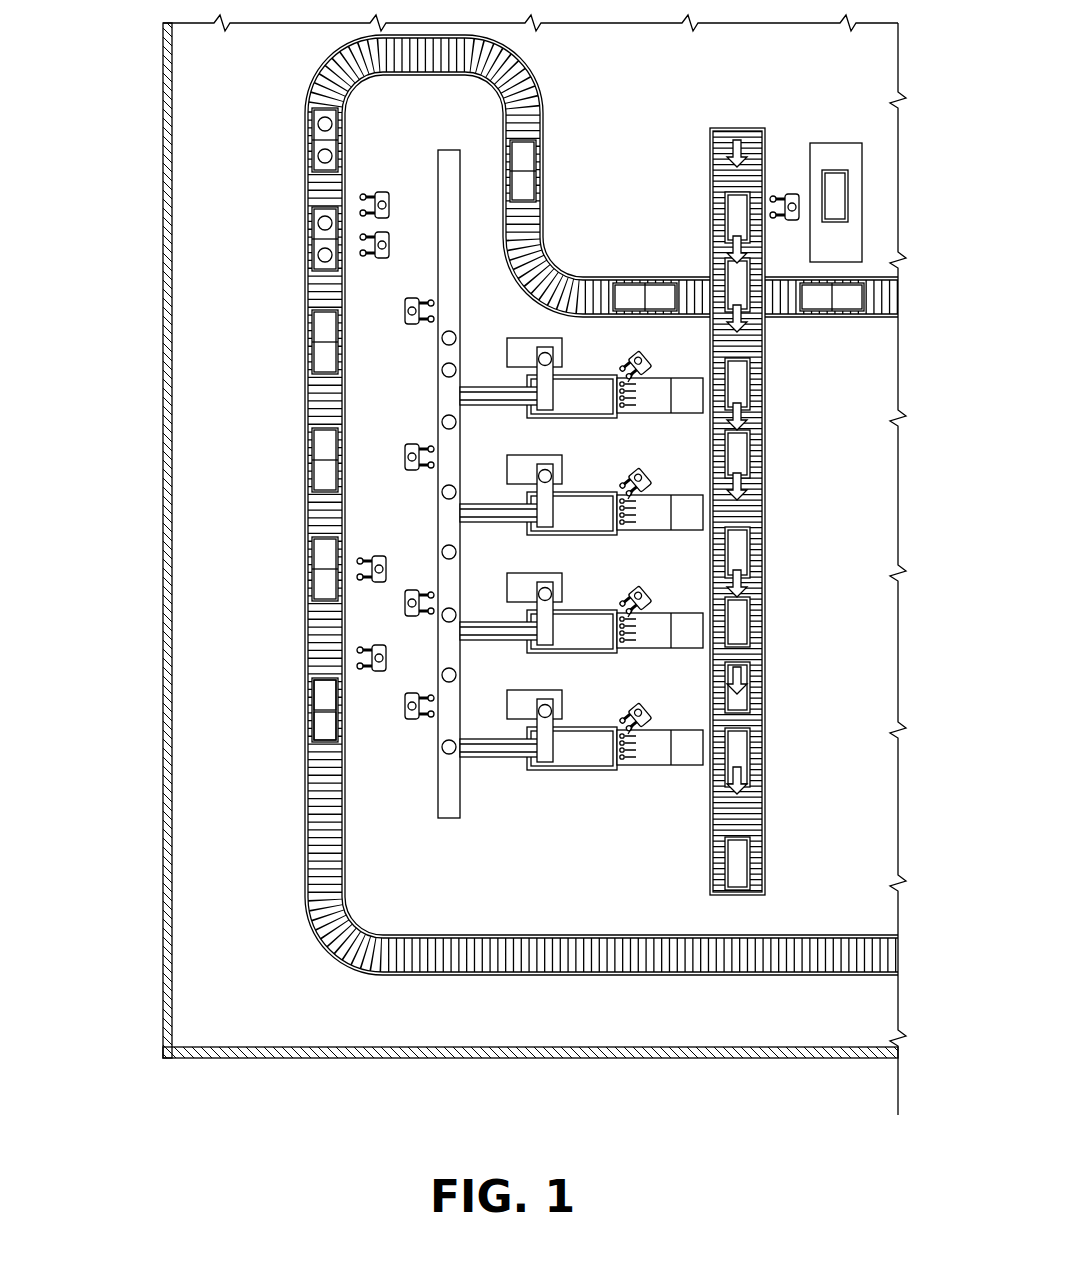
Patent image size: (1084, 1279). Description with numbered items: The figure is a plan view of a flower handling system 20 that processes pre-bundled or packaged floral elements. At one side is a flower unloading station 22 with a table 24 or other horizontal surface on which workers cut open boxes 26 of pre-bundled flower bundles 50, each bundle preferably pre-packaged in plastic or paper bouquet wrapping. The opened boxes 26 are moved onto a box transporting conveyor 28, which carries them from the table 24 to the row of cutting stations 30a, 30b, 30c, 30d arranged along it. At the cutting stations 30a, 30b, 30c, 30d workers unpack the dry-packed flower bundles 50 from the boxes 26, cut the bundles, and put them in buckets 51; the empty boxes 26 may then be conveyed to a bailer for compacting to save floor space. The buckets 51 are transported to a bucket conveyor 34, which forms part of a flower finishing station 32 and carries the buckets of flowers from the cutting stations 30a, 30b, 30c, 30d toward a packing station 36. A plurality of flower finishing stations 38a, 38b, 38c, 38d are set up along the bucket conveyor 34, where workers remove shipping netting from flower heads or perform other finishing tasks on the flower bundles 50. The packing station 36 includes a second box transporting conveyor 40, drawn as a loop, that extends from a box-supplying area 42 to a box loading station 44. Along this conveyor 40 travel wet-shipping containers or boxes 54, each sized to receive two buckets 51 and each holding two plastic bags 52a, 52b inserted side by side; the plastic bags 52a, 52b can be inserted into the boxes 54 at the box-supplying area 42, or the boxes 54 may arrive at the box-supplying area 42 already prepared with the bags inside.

The flower handling system 20 is at (124, 146).
The flower unloading station 22 is at (762, 462).
The table 24 is at (852, 174).
The boxes 26 is at (843, 198).
The box transporting conveyor 28 is at (710, 150).
The cutting station 30a is at (492, 363).
The cutting station 30b is at (492, 480).
The cutting station 30c is at (492, 600).
The cutting station 30d is at (581, 731).
The flower finishing station 32 is at (394, 482).
The bucket conveyor 34 is at (440, 215).
The packing station 36 is at (258, 590).
The flower finishing station 38a is at (413, 692).
The flower finishing station 38b is at (413, 589).
The flower finishing station 38c is at (413, 442).
The flower finishing station 38d is at (413, 298).
The box transporting conveyor 40 is at (542, 505).
The box-supplying area 42 is at (366, 692).
The box loading station 44 is at (370, 176).
The flower bundles 50 is at (634, 762).
The buckets 51 is at (447, 616).
The plastic bag 52a is at (318, 717).
The plastic bag 52b is at (318, 684).
The wet-shipping boxes 54 is at (284, 680).